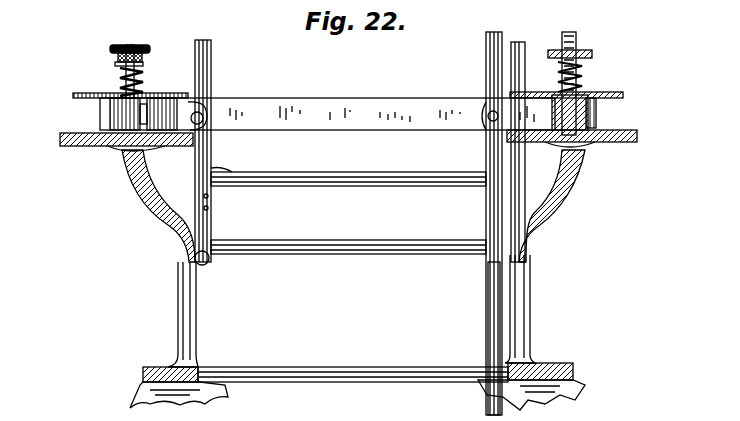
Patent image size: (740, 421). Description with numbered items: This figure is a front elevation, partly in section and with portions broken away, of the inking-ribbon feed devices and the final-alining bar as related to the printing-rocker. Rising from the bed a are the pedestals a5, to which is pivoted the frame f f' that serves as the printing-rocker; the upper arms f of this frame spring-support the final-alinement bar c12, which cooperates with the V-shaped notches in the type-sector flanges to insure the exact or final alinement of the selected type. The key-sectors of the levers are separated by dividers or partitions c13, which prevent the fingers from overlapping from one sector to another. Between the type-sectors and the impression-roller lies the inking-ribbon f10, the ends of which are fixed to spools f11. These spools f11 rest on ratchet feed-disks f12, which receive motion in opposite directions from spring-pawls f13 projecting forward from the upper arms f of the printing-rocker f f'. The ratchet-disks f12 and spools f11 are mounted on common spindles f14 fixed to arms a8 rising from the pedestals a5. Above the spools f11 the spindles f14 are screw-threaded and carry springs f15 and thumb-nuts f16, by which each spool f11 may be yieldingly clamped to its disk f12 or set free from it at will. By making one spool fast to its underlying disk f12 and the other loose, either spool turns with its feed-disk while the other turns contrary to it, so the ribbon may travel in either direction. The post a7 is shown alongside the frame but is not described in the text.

The upper arm f is at (348, 223).
The frame post a7 is at (518, 62).
The inking-ribbon f10 is at (110, 113).
The spool f11 is at (92, 93).
The ratchet feed-disk f12 is at (86, 147).
The spindle f14 is at (125, 47).
The thumb-nut f16 is at (140, 50).
The spring f15 is at (141, 78).
The spring-pawl f13 is at (211, 136).
The divider or partition c13 is at (213, 176).
The final-alining bar c12 is at (488, 186).
The arm a8 is at (145, 210).
The pedestal a5 is at (180, 302).
The bed a is at (340, 370).
The frame member f' is at (480, 338).